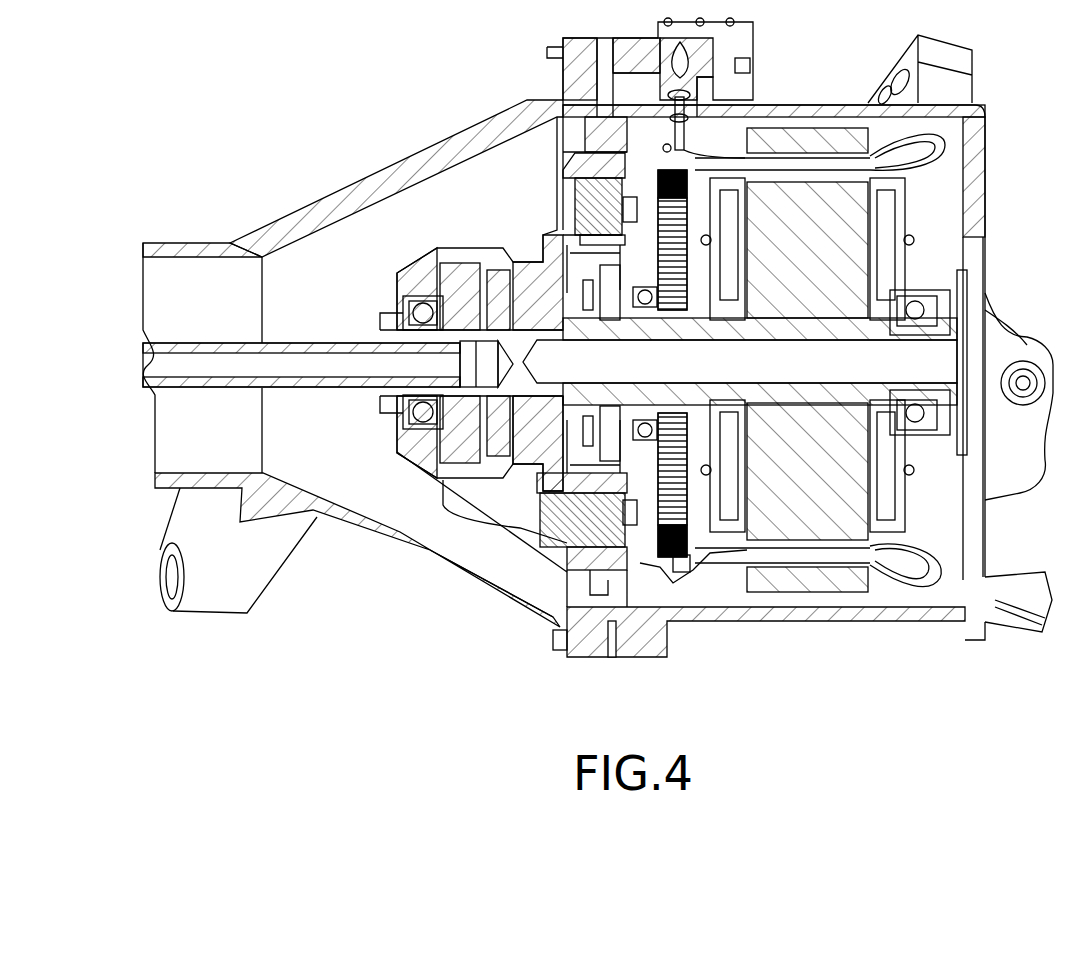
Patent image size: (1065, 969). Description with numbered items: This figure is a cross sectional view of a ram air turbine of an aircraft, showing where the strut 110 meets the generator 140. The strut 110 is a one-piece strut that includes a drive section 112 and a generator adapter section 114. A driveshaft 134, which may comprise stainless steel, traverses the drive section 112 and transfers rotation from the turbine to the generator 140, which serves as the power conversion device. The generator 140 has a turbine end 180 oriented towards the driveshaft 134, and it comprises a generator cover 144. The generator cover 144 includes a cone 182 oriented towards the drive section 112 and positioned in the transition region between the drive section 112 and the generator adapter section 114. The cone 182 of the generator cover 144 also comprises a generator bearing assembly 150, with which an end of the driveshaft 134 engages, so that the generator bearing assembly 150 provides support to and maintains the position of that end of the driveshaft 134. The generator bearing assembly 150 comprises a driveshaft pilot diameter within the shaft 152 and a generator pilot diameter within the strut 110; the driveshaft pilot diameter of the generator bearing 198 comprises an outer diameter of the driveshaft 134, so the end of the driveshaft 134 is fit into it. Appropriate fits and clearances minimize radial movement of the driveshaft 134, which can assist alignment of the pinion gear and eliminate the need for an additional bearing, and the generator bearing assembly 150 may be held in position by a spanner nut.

The strut 110 is at (244, 200).
The drive section 112 is at (185, 243).
The generator adapter section 114 is at (310, 207).
The driveshaft 134 is at (160, 372).
The generator 140 is at (834, 612).
The generator cover 144 is at (580, 567).
The generator bearing assembly 150 is at (372, 475).
The shaft 152 is at (517, 373).
The turbine end 180 is at (460, 220).
The cone 182 is at (453, 482).
The generator bearing 198 is at (413, 315).